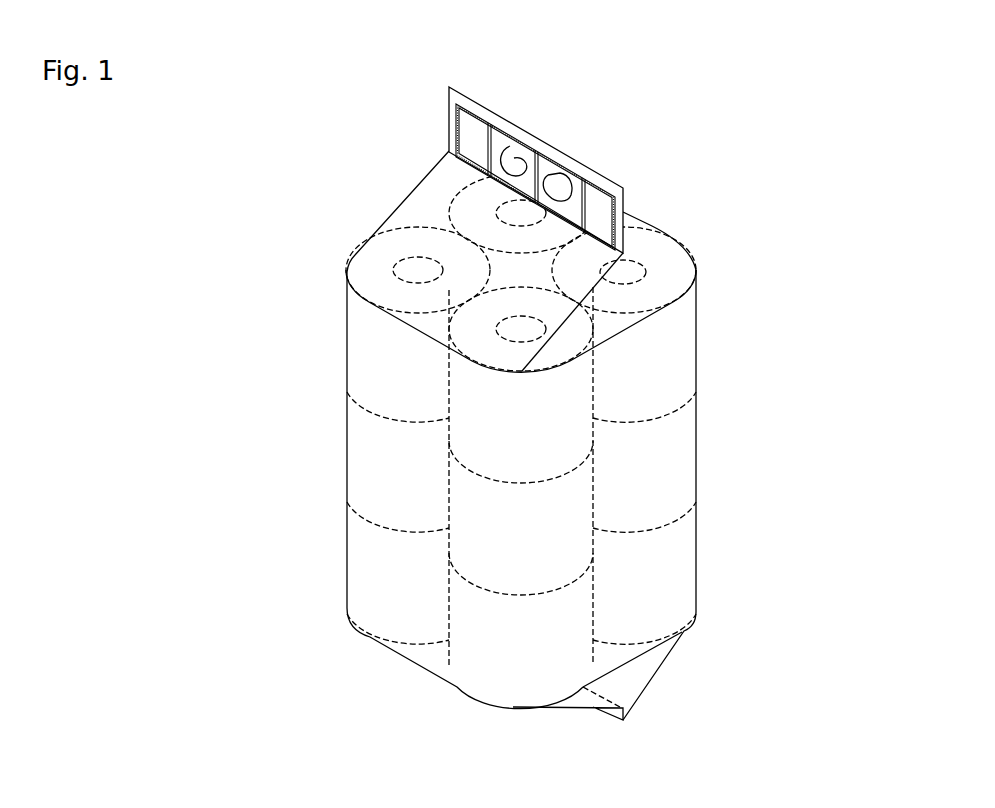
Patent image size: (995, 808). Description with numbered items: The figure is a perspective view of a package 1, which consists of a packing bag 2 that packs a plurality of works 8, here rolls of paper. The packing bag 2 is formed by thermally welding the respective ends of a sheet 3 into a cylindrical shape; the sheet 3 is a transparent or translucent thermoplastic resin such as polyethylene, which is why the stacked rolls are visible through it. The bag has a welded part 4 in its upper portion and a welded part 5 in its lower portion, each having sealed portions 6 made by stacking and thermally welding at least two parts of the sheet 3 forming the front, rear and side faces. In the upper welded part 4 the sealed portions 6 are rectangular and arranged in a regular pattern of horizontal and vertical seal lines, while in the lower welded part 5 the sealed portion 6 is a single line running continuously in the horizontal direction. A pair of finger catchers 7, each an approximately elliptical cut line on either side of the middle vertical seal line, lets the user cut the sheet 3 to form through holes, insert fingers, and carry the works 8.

The package 1 is at (543, 403).
The packing bag 2 is at (649, 227).
The sheet 3 is at (422, 207).
The welded part 4 is at (536, 148).
The welded part 5 is at (591, 697).
The sealed portion 6 is at (588, 710).
The finger catcher 7 is at (505, 152).
The work 8 is at (395, 450).